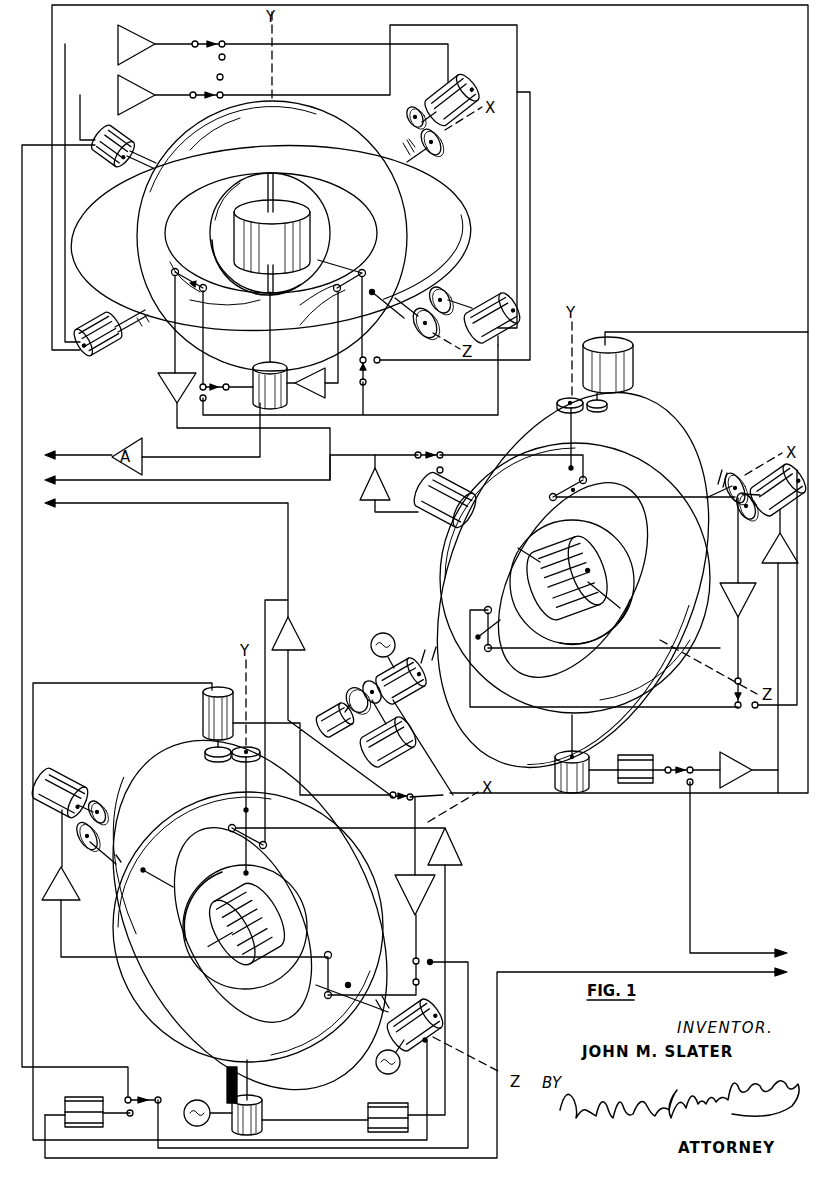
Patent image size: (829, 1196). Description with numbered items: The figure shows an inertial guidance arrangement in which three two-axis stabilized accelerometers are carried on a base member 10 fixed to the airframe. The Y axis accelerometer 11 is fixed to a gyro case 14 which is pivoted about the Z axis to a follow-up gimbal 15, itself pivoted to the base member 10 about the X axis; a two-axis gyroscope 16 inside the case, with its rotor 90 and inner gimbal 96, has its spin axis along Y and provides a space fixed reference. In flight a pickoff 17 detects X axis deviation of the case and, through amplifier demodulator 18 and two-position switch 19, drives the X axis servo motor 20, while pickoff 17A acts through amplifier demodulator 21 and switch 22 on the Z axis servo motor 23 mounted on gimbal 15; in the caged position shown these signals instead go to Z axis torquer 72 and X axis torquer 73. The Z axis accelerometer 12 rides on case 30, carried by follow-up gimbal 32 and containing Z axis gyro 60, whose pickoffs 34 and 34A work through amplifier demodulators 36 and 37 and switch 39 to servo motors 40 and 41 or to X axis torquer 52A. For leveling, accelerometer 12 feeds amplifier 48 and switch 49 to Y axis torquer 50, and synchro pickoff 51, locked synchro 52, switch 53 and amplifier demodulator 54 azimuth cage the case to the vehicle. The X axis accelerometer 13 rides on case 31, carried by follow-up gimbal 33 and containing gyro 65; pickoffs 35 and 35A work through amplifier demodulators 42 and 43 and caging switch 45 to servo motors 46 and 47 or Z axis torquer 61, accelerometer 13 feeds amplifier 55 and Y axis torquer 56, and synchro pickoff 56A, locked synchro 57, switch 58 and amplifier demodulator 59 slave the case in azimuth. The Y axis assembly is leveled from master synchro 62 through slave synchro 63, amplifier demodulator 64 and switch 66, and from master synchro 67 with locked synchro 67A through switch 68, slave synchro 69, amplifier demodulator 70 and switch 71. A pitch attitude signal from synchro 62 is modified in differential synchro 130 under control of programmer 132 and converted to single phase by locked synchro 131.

The base member 10 is at (404, 149).
The Y axis accelerometer 11 is at (288, 398).
The Z axis accelerometer 12 is at (430, 518).
The X axis accelerometer 13 is at (316, 880).
The gyro case 14 is at (328, 126).
The follow-up gimbal 15 is at (448, 197).
The two-axis gyroscope 16 is at (300, 194).
The X axis pickoff 17 is at (171, 271).
The Z axis pickoff 17A is at (308, 306).
The amplifier demodulator 18 is at (162, 380).
The two-position switch 19 is at (367, 372).
The X axis servo motor 20 is at (458, 90).
The amplifier demodulator 21 is at (328, 390).
The switch 22 is at (215, 392).
The Z axis servo motor 23 is at (477, 309).
The gyro case 30 is at (638, 470).
The gyro case 31 is at (306, 821).
The follow-up gimbal 32 is at (630, 406).
The follow-up gimbal 33 is at (376, 1061).
The X pickoff 34 is at (486, 652).
The Y axis pickoff 34A is at (550, 497).
The Z pickoff 35 is at (328, 952).
The Y axis pickoff 35A is at (230, 823).
The amplifier demodulator 36 is at (765, 557).
The amplifier demodulator 37 is at (745, 605).
The switch 39 is at (733, 683).
The servo motor 40 is at (765, 508).
The servo motor 41 is at (614, 366).
The amplifier demodulator 42 is at (72, 879).
The amplifier demodulator 43 is at (405, 896).
The caging switch 45 is at (413, 978).
The servo motor 46 is at (70, 786).
The servo motor 47 is at (202, 712).
The amplifier 48 is at (366, 484).
The switch 49 is at (420, 452).
The Y axis torquer 50 is at (588, 479).
The synchro pickoff 51 is at (580, 740).
The locked synchro 52 is at (637, 755).
The X axis torquer 52A is at (485, 607).
The switch 53 is at (688, 767).
The amplifier demodulator 54 is at (742, 756).
The amplifier 55 is at (300, 645).
The Y axis torquer 56 is at (266, 847).
The synchro pickoff 56A is at (262, 1110).
The locked synchro 57 is at (392, 1104).
The switch 58 is at (398, 801).
The amplifier demodulator 59 is at (458, 848).
The Z axis gyro 60 is at (606, 547).
The Z axis torquer 61 is at (322, 998).
The X axis synchro pickoff 62 is at (413, 690).
The slave synchro 63 is at (98, 333).
The amplifier demodulator 64 is at (135, 36).
The gyro 65 is at (208, 948).
The switch 66 is at (200, 42).
The master synchro 67 is at (413, 1050).
The locked synchro 67A is at (88, 1097).
The switch 68 is at (152, 1097).
The slave synchro 69 is at (126, 143).
The amplifier demodulator 70 is at (140, 87).
The switch 71 is at (196, 92).
The Z axis torquer 72 is at (366, 272).
The X axis torquer 73 is at (206, 294).
The gyro rotor 90 is at (304, 219).
The inner gimbal 96 is at (354, 213).
The differential synchro 130 is at (357, 691).
The locked synchro 131 is at (326, 710).
The programmer 132 is at (380, 754).